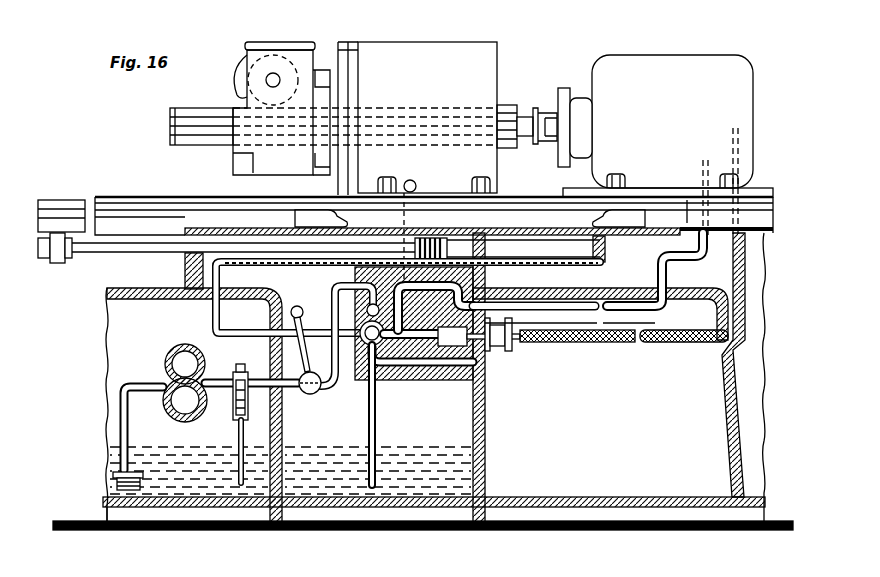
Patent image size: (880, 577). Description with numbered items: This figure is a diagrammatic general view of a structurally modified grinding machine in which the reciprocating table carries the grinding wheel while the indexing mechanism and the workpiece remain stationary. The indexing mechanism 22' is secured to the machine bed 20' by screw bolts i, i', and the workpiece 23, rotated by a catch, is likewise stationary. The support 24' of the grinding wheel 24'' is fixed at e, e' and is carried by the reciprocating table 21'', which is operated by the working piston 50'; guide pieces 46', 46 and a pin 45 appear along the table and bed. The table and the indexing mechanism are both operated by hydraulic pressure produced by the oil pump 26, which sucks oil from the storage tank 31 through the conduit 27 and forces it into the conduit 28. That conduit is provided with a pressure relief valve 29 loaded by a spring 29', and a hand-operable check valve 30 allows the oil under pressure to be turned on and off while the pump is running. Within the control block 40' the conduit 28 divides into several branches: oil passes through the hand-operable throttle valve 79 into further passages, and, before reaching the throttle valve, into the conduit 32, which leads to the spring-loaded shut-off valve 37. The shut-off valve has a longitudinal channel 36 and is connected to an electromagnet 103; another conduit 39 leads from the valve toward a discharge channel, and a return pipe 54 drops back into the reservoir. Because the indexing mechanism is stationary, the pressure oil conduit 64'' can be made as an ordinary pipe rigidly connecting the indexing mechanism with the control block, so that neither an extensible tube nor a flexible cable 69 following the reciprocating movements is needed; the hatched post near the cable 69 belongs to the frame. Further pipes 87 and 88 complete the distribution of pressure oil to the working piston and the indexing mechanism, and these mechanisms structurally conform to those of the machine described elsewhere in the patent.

The machine bed 20' is at (423, 381).
The reciprocating table 21'' is at (405, 207).
The indexing mechanism 22' is at (668, 115).
The workpiece 23 is at (502, 106).
The support of the grinding wheel 24' is at (365, 118).
The grinding wheel 24'' is at (250, 108).
The oil pump 26 is at (170, 371).
The conduit 27 is at (128, 434).
The conduit 28 is at (333, 300).
The pressure relief valve 29 is at (249, 388).
The spring 29' is at (256, 445).
The check valve 30 is at (311, 393).
The storage tank 31 is at (378, 471).
The conduit 32 is at (514, 332).
The longitudinal channel 36 is at (422, 348).
The shut-off valve 37 is at (479, 336).
The conduit 39 is at (410, 381).
The control block 40' is at (456, 374).
The pin 45 is at (417, 189).
The guide block 46 is at (619, 219).
The guide block 46' is at (321, 219).
The piston 50' is at (321, 248).
The return pipe 54 is at (378, 434).
The pressure oil conduit 64'' is at (656, 269).
The flexible cable 69 is at (747, 257).
The throttle valve 79 is at (365, 310).
The pipe 87 is at (531, 290).
The pipe 88 is at (215, 336).
The electromagnet 103 is at (500, 348).
The fixing point e is at (387, 174).
The fixing point e' is at (480, 172).
The screw bolt i is at (616, 171).
The screw bolt i' is at (720, 181).